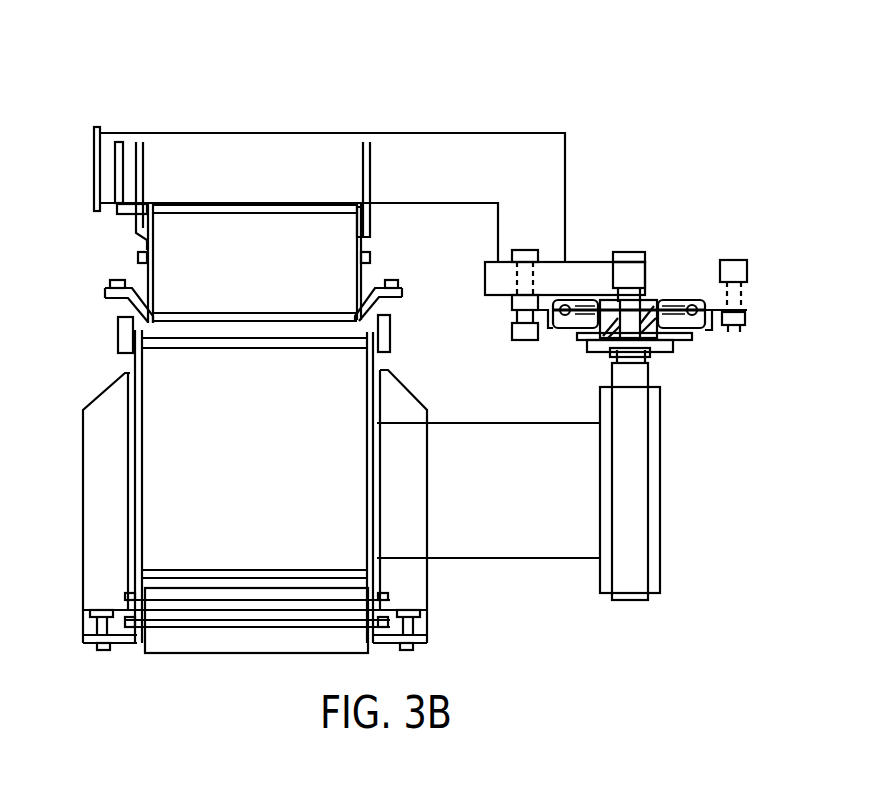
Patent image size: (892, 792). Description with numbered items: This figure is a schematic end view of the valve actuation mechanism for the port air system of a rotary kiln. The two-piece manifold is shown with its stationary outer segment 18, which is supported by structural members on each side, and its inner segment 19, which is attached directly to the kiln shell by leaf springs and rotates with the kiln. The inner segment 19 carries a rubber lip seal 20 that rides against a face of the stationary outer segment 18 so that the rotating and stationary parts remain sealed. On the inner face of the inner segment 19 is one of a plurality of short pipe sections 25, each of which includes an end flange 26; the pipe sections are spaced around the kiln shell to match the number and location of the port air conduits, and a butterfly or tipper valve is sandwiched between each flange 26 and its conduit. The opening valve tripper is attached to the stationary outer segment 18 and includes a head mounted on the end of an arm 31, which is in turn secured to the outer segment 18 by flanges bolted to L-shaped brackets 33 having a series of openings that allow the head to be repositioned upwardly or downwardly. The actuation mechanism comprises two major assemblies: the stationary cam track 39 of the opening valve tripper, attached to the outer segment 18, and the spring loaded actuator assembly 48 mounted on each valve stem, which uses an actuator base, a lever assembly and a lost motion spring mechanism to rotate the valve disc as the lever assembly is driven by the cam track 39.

The outer segment 18 is at (134, 274).
The inner segment 19 is at (127, 503).
The rubber lip seal 20 is at (143, 350).
The short pipe section 25 is at (490, 558).
The end flange 26 is at (603, 578).
The arm 31 is at (253, 142).
The L-shaped bracket 33 is at (370, 220).
The stationary cam track 39 is at (585, 272).
The spring loaded actuator assembly 48 is at (665, 303).